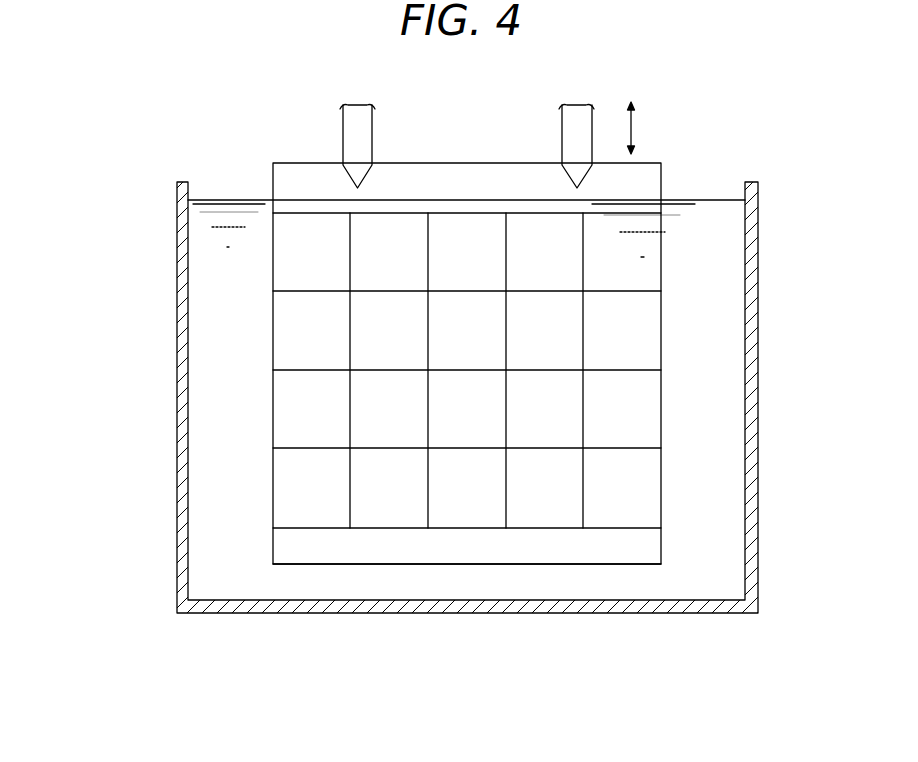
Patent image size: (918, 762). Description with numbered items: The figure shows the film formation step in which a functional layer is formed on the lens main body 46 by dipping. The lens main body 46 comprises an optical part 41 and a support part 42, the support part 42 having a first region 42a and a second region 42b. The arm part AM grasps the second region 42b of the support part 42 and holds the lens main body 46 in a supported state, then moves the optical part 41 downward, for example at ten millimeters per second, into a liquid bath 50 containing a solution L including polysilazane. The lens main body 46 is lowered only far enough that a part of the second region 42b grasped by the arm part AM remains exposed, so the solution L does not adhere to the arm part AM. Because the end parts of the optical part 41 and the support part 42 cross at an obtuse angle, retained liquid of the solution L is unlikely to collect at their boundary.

The optical part 41 is at (417, 529).
The support part 42 is at (514, 394).
The first region 42a is at (628, 553).
The second region 42b is at (653, 188).
The lens main body 46 is at (327, 565).
The liquid bath 50 is at (758, 417).
The solution L is at (200, 222).
The arm part AM is at (360, 140).